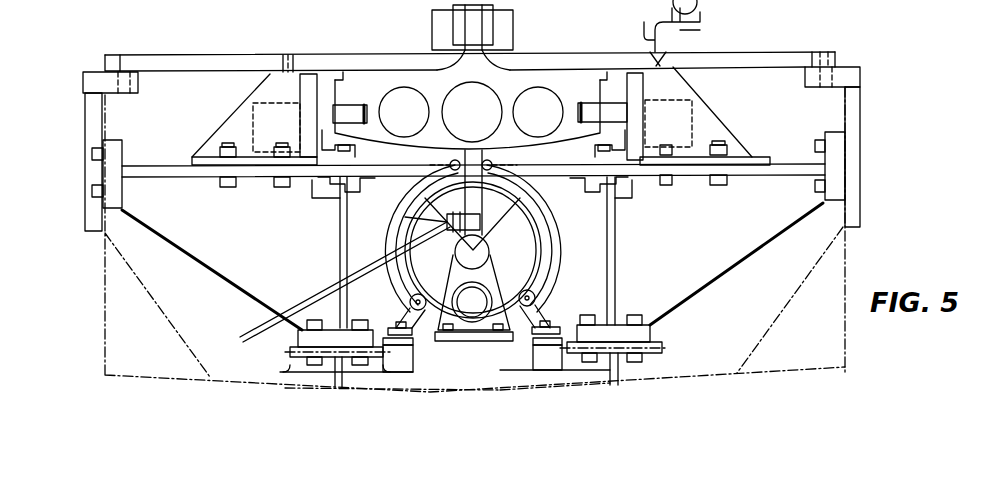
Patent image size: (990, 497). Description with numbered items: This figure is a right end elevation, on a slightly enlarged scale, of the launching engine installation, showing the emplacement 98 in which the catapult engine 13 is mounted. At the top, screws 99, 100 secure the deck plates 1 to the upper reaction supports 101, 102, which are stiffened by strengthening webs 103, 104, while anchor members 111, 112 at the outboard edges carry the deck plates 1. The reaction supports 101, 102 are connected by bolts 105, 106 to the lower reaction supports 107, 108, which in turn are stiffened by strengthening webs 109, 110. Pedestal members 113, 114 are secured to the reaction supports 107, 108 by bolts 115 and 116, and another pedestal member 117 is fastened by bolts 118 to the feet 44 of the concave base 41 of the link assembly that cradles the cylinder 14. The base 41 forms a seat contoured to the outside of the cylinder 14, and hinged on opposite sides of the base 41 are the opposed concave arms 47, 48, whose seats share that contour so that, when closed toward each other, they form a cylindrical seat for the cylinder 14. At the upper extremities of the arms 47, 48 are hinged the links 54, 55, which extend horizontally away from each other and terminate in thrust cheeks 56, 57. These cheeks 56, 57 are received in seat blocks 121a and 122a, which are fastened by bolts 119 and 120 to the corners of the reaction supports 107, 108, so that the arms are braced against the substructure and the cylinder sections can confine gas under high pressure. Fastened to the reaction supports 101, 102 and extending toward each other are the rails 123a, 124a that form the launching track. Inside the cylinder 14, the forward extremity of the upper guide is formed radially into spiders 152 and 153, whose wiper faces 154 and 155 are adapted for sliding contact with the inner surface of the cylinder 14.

The deck plate 1 is at (380, 60).
The catapult engine 13 is at (532, 248).
The cylinder 14 is at (535, 258).
The concave base 41 is at (428, 318).
The feet 44 is at (408, 340).
The concave arm 47 is at (393, 232).
The concave arm 48 is at (548, 230).
The link 54 is at (393, 176).
The link 55 is at (555, 170).
The thrust cheek 56 is at (357, 165).
The thrust cheek 57 is at (578, 163).
The emplacement 98 is at (846, 62).
The screw 99 is at (288, 55).
The screw 100 is at (680, 62).
The reaction support 101 is at (254, 142).
The reaction support 102 is at (705, 142).
The strengthening web 103 is at (215, 136).
The strengthening web 104 is at (744, 136).
The bolt 105 is at (222, 185).
The bolt 106 is at (730, 183).
The reaction support 107 is at (244, 237).
The reaction support 108 is at (704, 223).
The strengthening web 109 is at (213, 272).
The strengthening web 110 is at (712, 283).
The anchor member 111 is at (83, 118).
The anchor member 112 is at (862, 108).
The pedestal member 113 is at (292, 351).
The pedestal member 114 is at (664, 348).
The bolt 115 is at (310, 306).
The bolt 116 is at (637, 316).
The pedestal member 117 is at (392, 375).
The bolt 118 is at (396, 326).
The bolt 119 is at (300, 186).
The bolt 120 is at (662, 183).
The seat block 121a is at (330, 196).
The seat block 122a is at (618, 196).
The rail 123a is at (350, 110).
The rail 124a is at (578, 108).
The spider 152 is at (448, 220).
The spider 153 is at (505, 220).
The wiper face 154 is at (410, 204).
The wiper face 155 is at (548, 218).